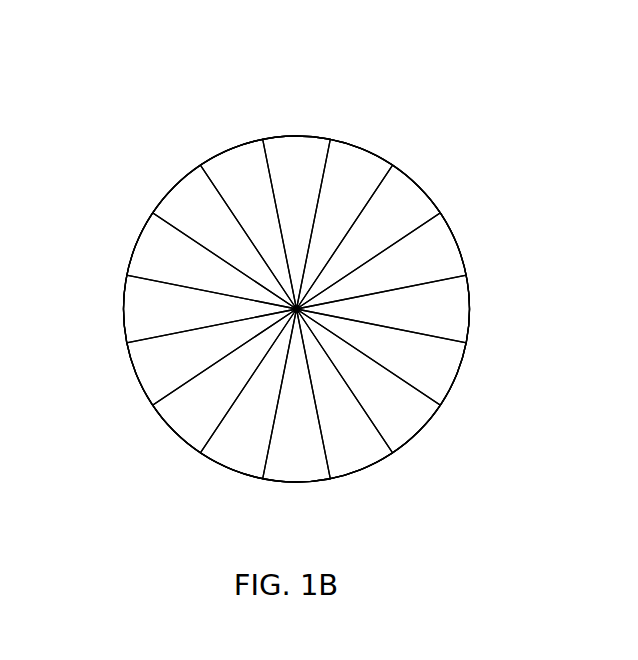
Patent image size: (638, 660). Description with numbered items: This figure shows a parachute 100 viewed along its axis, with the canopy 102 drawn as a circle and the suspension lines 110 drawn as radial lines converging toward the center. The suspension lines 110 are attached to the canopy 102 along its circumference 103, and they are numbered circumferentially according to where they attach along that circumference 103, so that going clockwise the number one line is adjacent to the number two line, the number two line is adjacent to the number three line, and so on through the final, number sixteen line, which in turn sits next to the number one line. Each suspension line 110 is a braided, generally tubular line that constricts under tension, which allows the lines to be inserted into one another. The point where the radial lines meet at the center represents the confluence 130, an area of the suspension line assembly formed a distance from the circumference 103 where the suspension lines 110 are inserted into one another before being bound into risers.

The parachute 100 is at (310, 279).
The canopy 102 is at (294, 313).
The circumference 103 is at (457, 242).
The suspension lines 110 is at (294, 313).
The confluence 130 is at (295, 307).